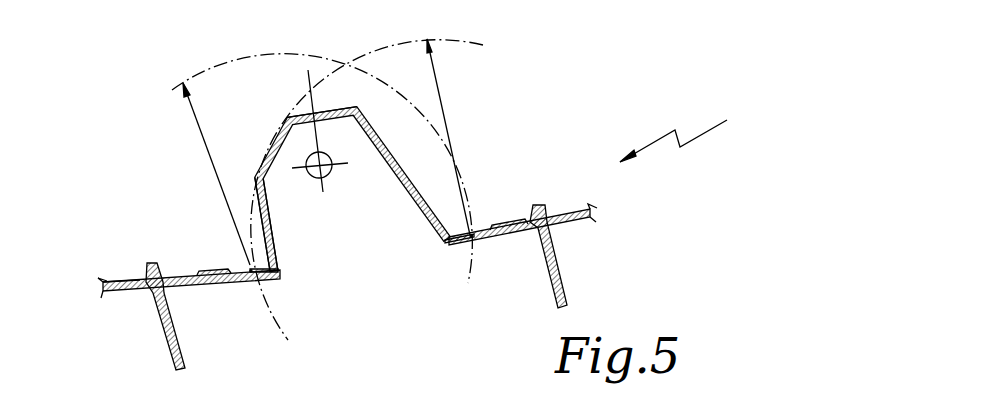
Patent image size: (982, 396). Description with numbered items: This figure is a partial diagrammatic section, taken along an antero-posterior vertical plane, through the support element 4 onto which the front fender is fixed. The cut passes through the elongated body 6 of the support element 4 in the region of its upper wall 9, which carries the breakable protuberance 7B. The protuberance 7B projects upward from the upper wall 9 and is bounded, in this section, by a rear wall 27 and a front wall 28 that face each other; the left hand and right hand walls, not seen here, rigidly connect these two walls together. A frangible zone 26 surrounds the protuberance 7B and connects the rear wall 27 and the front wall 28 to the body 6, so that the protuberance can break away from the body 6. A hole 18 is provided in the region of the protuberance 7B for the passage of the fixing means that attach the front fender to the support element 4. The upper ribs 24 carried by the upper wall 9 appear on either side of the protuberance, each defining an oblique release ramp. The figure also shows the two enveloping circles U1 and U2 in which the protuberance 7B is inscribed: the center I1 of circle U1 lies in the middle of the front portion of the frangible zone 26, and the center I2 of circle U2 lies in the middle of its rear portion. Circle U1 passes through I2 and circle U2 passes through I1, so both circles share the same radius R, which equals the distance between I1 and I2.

The support element 4 is at (680, 132).
The elongated body 6 is at (113, 280).
The upper wall 9 is at (188, 277).
The breakable protuberance 7B is at (330, 107).
The hole 18 is at (330, 172).
The upper rib 24 is at (150, 262).
The frangible zone 26 is at (263, 278).
The rear wall 27 is at (408, 167).
The front wall 28 is at (277, 217).
The center of circle U1 I1 is at (252, 273).
The center of circle U2 I2 is at (471, 237).
The enveloping circle U1 is at (322, 155).
The enveloping circle U2 is at (367, 175).
The radius R is at (320, 152).